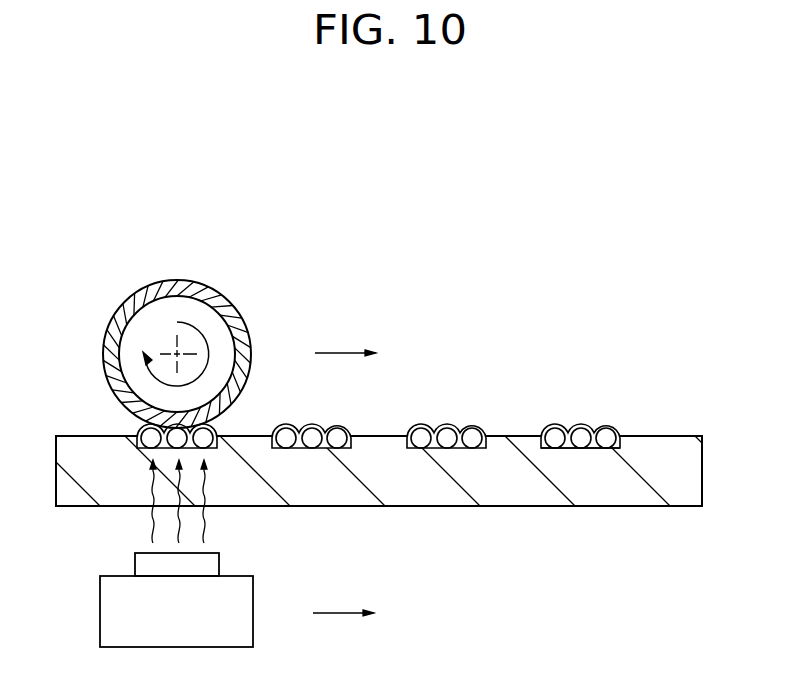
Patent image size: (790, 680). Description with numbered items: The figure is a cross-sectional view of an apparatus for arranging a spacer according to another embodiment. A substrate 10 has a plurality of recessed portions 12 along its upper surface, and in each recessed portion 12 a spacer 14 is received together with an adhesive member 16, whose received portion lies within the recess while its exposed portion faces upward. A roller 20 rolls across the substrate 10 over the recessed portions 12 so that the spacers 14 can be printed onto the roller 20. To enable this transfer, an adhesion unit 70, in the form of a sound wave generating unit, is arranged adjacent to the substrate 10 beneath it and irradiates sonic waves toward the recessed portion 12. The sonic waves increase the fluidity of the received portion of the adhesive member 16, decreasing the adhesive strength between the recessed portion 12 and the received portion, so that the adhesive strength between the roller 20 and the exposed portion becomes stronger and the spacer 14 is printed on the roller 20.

The substrate 10 is at (670, 470).
The recessed portion 12 is at (594, 450).
The spacer 14 is at (605, 436).
The adhesive member 16 is at (572, 428).
The roller 20 is at (113, 342).
The adhesion unit 70 is at (100, 606).